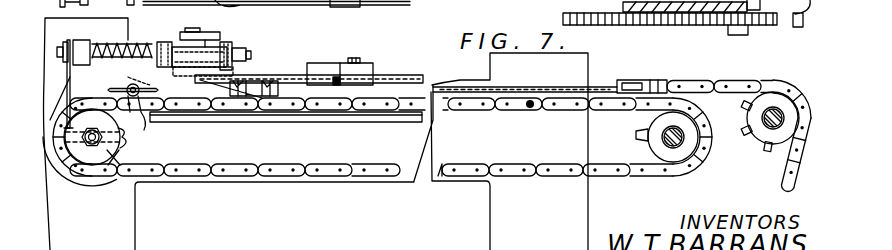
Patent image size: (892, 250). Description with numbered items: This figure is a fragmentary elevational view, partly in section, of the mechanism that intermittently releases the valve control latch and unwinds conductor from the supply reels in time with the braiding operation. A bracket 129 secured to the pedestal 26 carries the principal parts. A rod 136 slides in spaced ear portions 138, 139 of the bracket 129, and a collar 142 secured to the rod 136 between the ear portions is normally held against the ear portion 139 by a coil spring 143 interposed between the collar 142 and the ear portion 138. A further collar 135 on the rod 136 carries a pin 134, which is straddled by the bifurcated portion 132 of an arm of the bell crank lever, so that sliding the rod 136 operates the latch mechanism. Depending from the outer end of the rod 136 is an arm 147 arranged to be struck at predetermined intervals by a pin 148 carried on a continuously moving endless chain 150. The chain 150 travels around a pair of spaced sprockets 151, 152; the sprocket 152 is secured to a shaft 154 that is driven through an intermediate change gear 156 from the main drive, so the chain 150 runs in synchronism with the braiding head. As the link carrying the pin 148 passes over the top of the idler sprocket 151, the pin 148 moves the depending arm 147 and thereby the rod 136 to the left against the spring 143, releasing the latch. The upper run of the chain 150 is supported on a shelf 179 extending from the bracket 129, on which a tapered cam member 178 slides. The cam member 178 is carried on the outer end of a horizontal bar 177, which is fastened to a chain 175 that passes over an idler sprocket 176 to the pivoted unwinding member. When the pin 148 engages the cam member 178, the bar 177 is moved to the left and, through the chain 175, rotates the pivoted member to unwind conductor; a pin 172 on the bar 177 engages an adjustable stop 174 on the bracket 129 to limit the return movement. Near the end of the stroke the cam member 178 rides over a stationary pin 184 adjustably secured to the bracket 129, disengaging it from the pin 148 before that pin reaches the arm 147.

The pedestal 26 is at (330, 157).
The bracket 129 is at (150, 170).
The bifurcated portion 132 is at (234, 36).
The pin 134 is at (233, 30).
The collar 135 is at (208, 34).
The rod 136 is at (188, 37).
The ear portion 138 is at (81, 62).
The ear portion 139 is at (167, 66).
The collar 142 is at (155, 49).
The coil spring 143 is at (126, 40).
The arm 147 is at (48, 184).
The pin 148 is at (522, 106).
The endless chain 150 is at (238, 173).
The sprocket 151 is at (111, 183).
The sprocket 152 is at (640, 133).
The shaft 154 is at (672, 142).
The change gear 156 is at (588, 13).
The pin 172 is at (367, 63).
The adjustable stop 174 is at (337, 80).
The chain 175 is at (784, 182).
The idler sprocket 176 is at (760, 104).
The horizontal bar 177 is at (559, 87).
The tapered cam member 178 is at (257, 96).
The shelf 179 is at (404, 116).
The stationary pin 184 is at (146, 114).